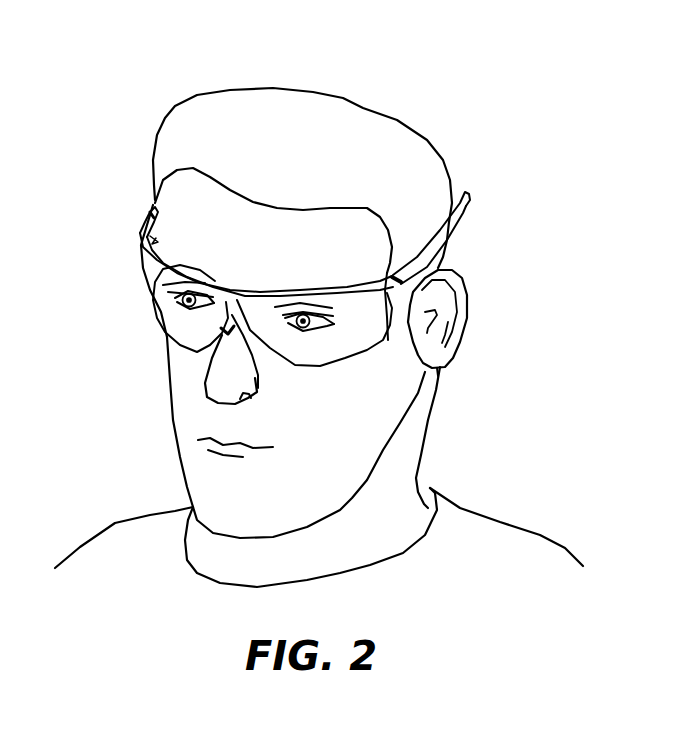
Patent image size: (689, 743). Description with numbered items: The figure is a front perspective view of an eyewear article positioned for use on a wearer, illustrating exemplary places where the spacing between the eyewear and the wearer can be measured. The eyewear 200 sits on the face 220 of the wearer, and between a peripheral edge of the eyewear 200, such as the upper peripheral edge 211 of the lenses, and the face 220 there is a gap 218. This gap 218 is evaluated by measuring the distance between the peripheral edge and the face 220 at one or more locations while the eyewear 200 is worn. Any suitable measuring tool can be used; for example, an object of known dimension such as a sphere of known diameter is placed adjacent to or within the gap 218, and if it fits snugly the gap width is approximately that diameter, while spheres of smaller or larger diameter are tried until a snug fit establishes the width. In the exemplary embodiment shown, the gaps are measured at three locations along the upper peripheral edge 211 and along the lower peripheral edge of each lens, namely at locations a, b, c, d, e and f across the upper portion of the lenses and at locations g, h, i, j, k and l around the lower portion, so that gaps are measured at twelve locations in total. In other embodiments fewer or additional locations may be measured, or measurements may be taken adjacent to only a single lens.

The eyewear 200 is at (265, 246).
The upper peripheral edge 211 is at (318, 246).
The gap 218 is at (257, 209).
The face 220 is at (311, 177).
The location a is at (129, 226).
The location b is at (185, 232).
The location c is at (212, 242).
The location d is at (252, 260).
The location e is at (305, 262).
The location f is at (372, 255).
The location g is at (123, 306).
The location h is at (145, 353).
The location i is at (175, 378).
The location j is at (273, 397).
The location k is at (323, 402).
The location l is at (390, 372).